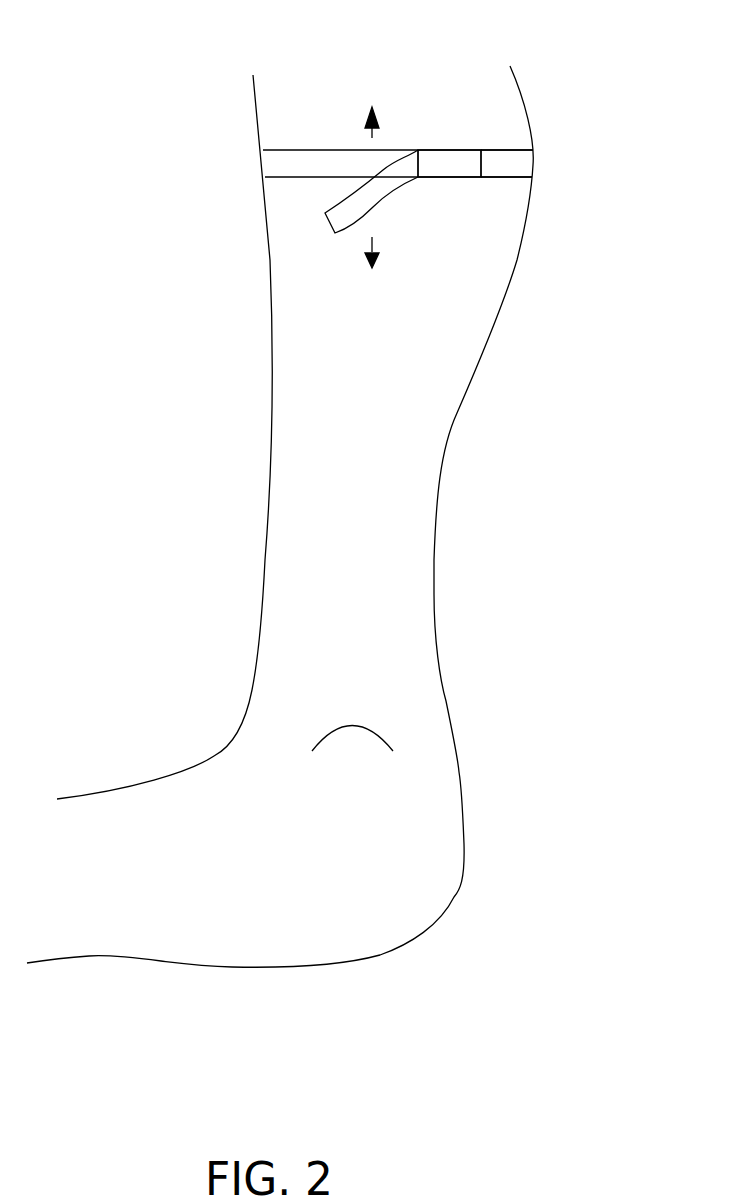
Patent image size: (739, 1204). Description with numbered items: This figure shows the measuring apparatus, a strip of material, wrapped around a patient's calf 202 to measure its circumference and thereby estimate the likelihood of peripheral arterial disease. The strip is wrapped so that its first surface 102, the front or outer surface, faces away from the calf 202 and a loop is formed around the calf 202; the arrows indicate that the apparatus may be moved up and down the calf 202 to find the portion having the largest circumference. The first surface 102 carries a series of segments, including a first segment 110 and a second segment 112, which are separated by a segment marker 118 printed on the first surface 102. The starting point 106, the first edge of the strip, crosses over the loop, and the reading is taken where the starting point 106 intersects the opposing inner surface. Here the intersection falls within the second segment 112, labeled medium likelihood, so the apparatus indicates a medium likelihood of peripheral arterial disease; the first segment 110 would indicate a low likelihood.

The first surface 102 is at (522, 168).
The starting point 106 is at (420, 150).
The first segment 110 is at (503, 162).
The second segment 112 is at (429, 162).
The segment marker 118 is at (485, 163).
The calf 202 is at (518, 212).